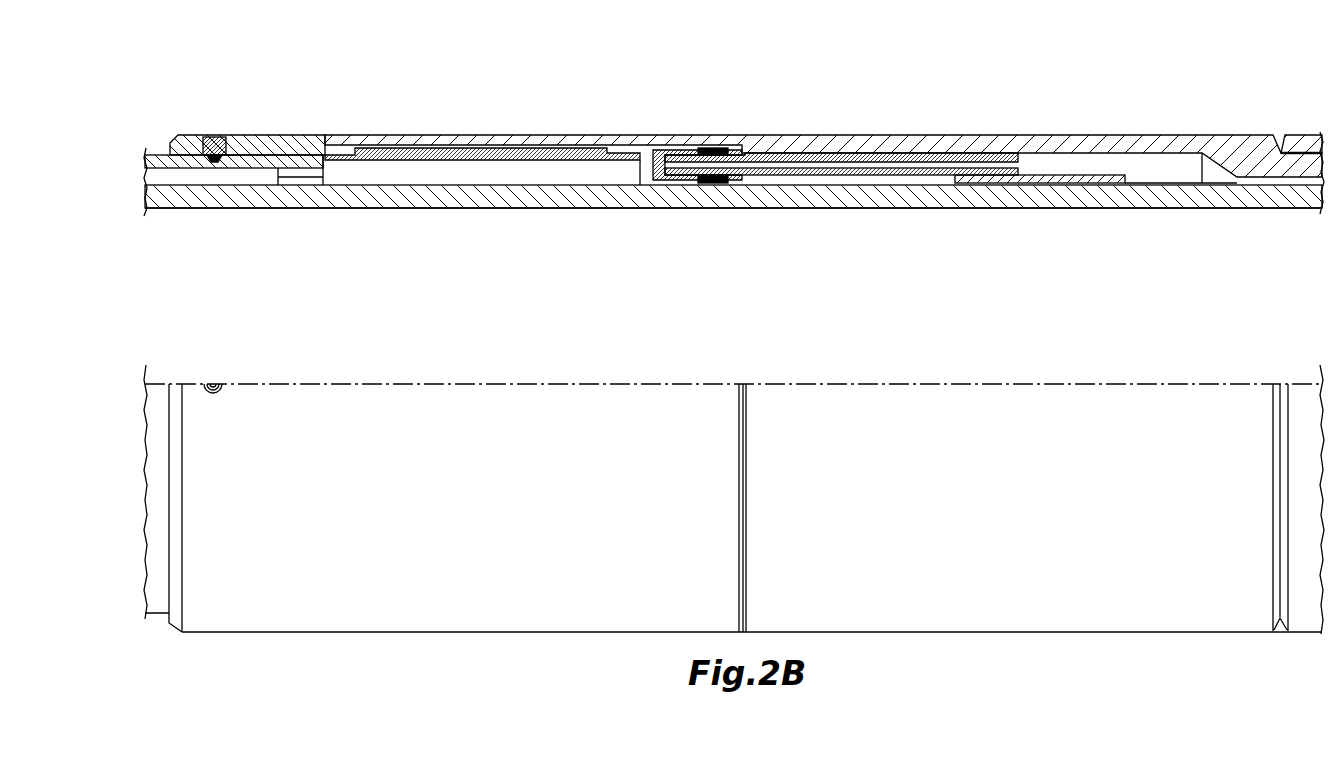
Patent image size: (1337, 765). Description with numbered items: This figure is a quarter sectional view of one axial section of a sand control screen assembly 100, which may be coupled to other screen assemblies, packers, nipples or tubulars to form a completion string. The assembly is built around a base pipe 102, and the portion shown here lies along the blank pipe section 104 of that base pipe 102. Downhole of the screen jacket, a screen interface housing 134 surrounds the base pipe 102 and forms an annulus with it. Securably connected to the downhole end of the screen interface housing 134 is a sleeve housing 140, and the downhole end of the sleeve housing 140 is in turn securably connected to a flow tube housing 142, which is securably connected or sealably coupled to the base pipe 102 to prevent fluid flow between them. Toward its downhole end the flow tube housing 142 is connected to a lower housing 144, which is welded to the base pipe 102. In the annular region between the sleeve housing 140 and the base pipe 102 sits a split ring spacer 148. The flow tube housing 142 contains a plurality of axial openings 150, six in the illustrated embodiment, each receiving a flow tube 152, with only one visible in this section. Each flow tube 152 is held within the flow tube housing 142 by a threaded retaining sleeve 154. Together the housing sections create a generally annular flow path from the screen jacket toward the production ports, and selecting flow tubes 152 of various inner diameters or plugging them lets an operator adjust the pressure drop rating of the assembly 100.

The sand control screen assembly 100 is at (979, 96).
The base pipe 102 is at (427, 205).
The blank pipe section 104 is at (797, 200).
The screen interface housing 134 is at (249, 147).
The sleeve housing 140 is at (357, 150).
The flow tube housing 142 is at (806, 150).
The lower housing 144 is at (1303, 133).
The split ring spacer 148 is at (530, 147).
The axial openings 150 is at (845, 153).
The flow tubes 152 is at (763, 153).
The threaded retaining sleeve 154 is at (676, 155).